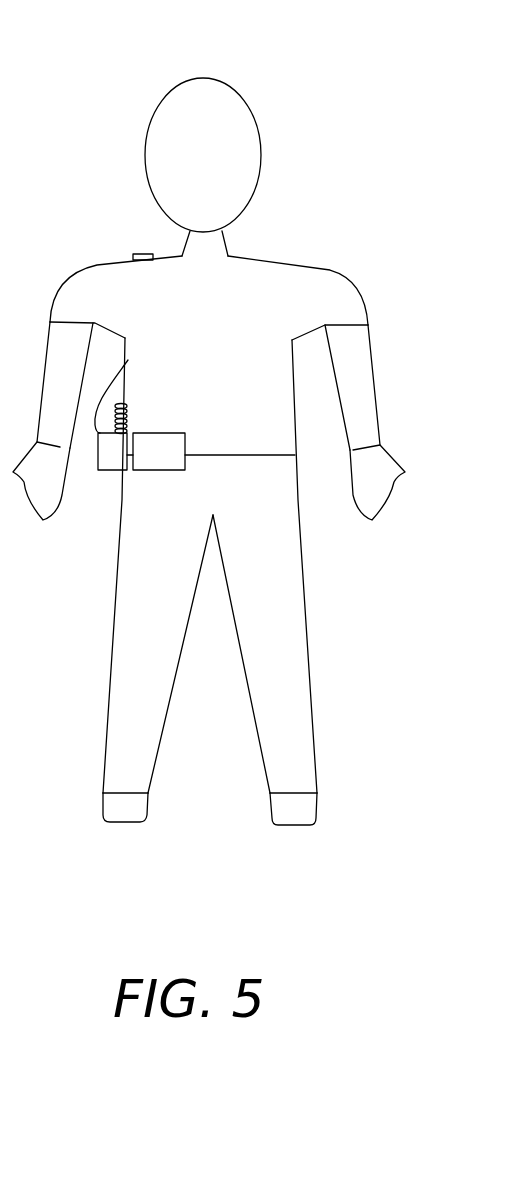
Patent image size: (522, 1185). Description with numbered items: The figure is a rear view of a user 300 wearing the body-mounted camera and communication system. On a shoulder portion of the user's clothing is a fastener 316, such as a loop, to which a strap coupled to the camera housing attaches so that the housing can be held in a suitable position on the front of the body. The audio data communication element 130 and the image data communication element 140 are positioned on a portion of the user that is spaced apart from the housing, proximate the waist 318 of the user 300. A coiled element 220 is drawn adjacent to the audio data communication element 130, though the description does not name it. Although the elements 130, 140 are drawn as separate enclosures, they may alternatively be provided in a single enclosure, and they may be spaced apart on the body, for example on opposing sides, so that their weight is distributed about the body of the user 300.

The user 300 is at (142, 47).
The fastener 316 is at (143, 254).
The audio data communication element 130 is at (128, 360).
The coiled cord 220 is at (120, 402).
The image data communication element 140 is at (163, 432).
The waist 318 is at (250, 455).